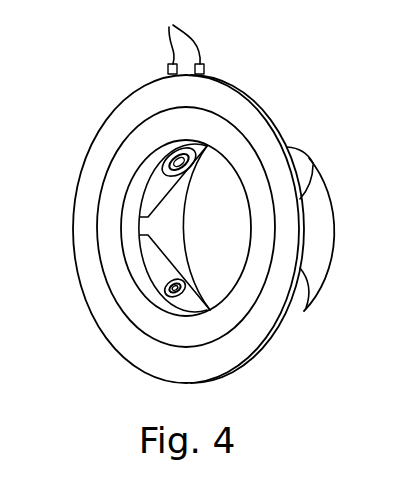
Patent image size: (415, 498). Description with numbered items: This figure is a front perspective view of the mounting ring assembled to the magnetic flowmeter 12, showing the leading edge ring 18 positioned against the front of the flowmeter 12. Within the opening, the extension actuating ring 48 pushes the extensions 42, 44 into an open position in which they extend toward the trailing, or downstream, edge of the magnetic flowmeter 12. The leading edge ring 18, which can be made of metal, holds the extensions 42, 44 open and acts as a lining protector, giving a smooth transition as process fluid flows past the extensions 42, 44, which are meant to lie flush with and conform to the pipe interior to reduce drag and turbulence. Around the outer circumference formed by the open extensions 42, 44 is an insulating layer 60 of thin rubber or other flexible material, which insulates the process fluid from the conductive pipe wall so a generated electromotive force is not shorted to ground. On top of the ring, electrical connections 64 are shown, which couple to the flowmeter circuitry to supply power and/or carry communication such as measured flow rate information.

The magnetic flowmeter 12 is at (266, 114).
The leading edge ring 18 is at (110, 228).
The extension 42 is at (157, 192).
The extension 44 is at (300, 163).
The extension actuating ring 48 is at (116, 249).
The insulating layer 60 is at (332, 218).
The electrical connections 64 is at (181, 39).